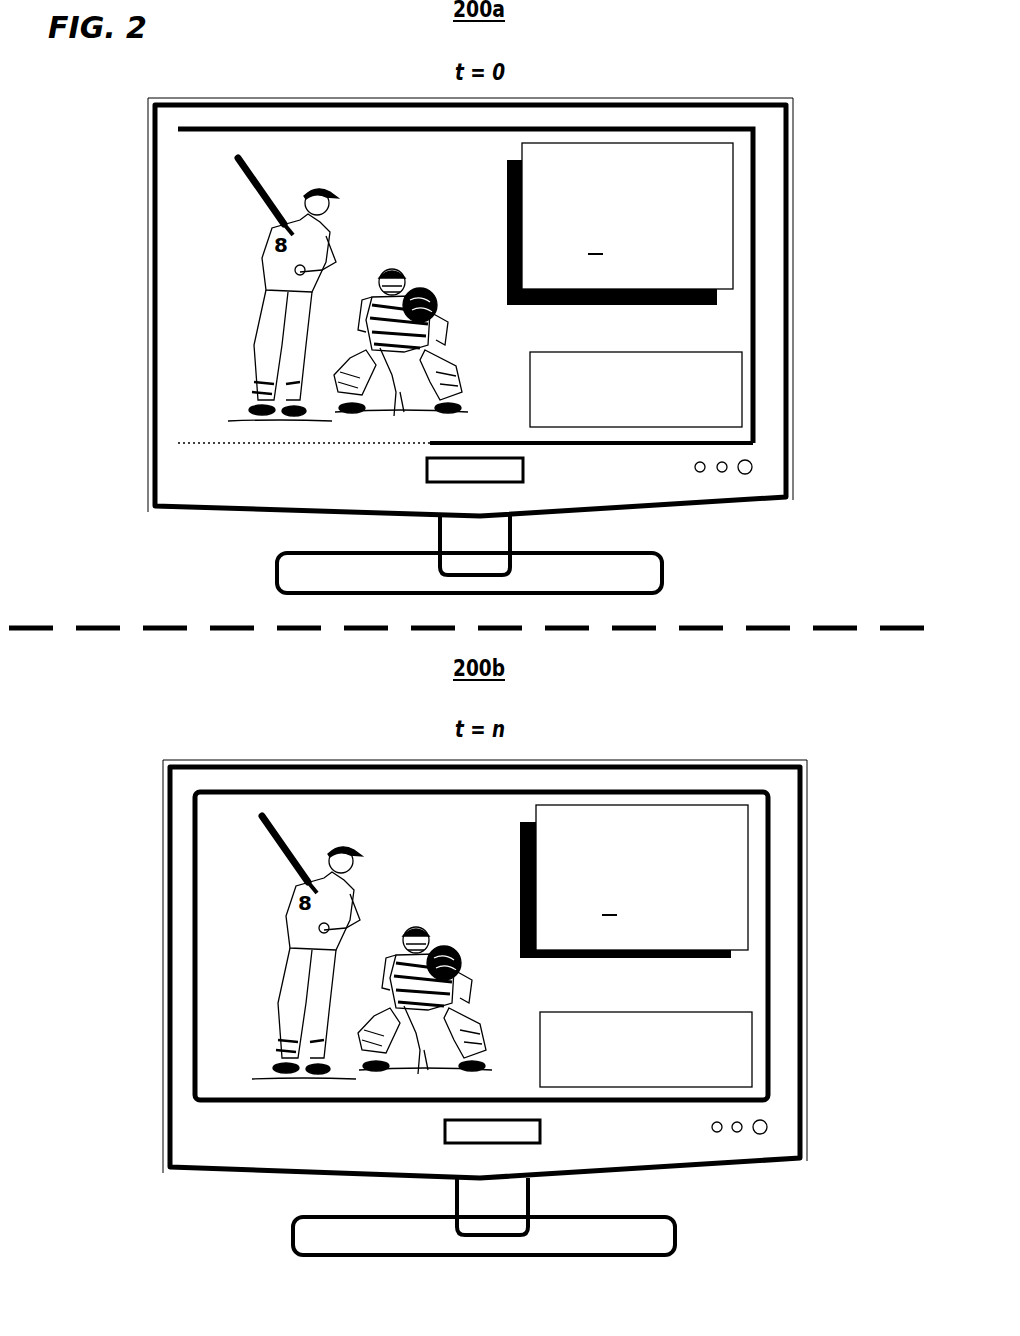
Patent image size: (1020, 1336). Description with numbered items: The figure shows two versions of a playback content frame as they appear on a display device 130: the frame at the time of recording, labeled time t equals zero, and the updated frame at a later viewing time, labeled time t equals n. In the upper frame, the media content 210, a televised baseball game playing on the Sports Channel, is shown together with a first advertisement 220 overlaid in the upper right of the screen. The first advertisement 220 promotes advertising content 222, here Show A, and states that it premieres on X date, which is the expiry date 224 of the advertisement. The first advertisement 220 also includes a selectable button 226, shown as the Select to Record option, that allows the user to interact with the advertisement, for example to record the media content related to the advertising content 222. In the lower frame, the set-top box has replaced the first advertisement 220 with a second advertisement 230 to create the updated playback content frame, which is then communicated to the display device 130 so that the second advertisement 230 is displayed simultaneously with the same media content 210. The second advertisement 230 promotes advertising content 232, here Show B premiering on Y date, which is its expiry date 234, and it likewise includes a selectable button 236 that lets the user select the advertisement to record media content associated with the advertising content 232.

The display device 130 is at (278, 570).
The media content 210 is at (212, 268).
The first advertisement 220 is at (682, 143).
The advertising content 222 is at (680, 165).
The expiry date 224 is at (577, 242).
The selectable button 226 is at (715, 268).
The second advertisement 230 is at (693, 805).
The advertising content 232 is at (697, 820).
The expiry date 234 is at (592, 903).
The selectable button 236 is at (730, 938).